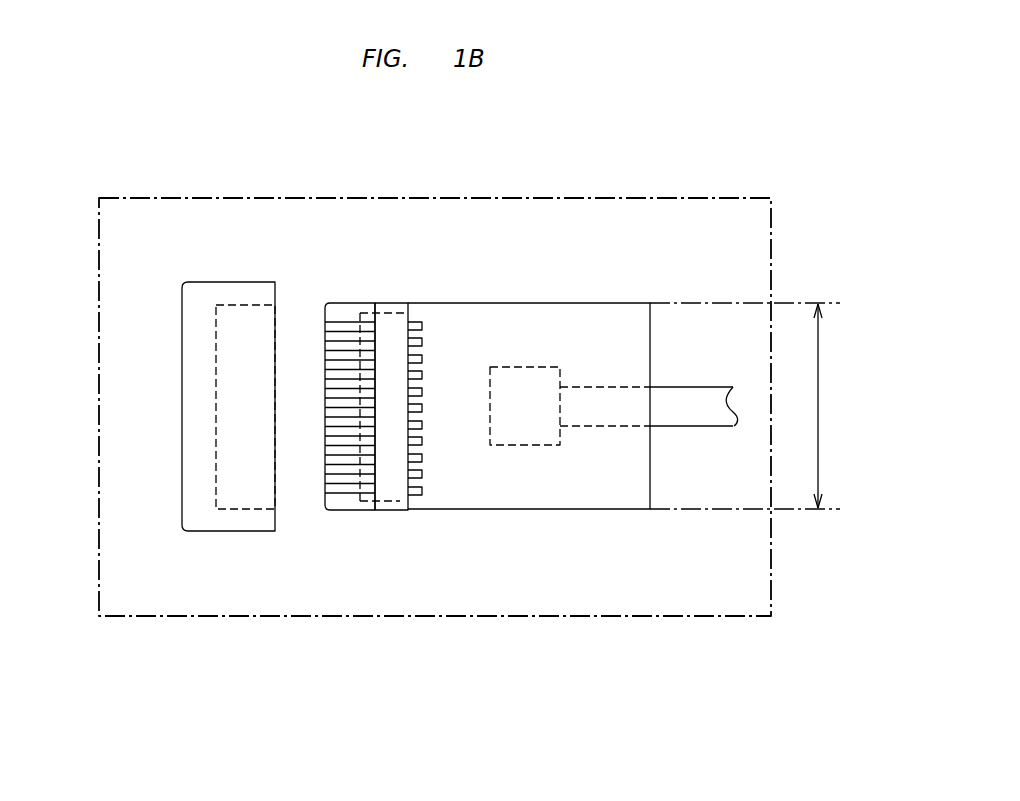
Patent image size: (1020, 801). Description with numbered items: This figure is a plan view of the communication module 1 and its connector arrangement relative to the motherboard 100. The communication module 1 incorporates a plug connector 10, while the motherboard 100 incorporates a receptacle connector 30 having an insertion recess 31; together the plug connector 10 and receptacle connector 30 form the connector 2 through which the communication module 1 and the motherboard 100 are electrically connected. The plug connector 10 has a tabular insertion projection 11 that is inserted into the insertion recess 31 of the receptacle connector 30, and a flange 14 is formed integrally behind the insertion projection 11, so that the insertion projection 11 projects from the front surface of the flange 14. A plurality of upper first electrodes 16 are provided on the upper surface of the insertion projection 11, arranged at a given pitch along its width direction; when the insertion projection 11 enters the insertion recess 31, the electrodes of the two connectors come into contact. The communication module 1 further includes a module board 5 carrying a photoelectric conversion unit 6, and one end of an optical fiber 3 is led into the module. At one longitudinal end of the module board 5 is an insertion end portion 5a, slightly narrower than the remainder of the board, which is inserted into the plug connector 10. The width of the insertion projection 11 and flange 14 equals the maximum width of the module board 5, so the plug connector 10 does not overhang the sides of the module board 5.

The motherboard 100 is at (757, 241).
The communication module 1 is at (615, 548).
The connector 2 is at (369, 714).
The optical fiber 3 is at (692, 426).
The module board 5 is at (603, 303).
The insertion end portion 5a is at (398, 510).
The photoelectric conversion unit 6 is at (528, 445).
The plug connector 10 is at (380, 518).
The insertion projection 11 is at (348, 303).
The flange 14 is at (402, 303).
The upper first electrodes 16 is at (423, 352).
The receptacle connector 30 is at (245, 431).
The insertion recess 31 is at (241, 318).